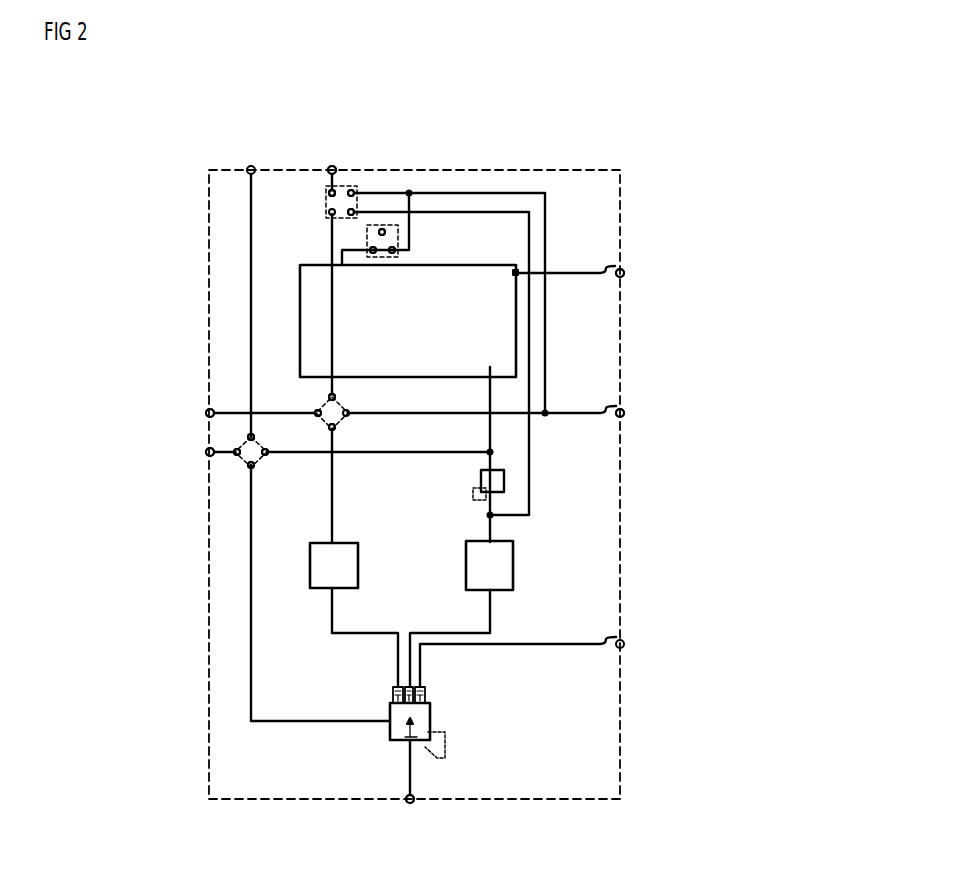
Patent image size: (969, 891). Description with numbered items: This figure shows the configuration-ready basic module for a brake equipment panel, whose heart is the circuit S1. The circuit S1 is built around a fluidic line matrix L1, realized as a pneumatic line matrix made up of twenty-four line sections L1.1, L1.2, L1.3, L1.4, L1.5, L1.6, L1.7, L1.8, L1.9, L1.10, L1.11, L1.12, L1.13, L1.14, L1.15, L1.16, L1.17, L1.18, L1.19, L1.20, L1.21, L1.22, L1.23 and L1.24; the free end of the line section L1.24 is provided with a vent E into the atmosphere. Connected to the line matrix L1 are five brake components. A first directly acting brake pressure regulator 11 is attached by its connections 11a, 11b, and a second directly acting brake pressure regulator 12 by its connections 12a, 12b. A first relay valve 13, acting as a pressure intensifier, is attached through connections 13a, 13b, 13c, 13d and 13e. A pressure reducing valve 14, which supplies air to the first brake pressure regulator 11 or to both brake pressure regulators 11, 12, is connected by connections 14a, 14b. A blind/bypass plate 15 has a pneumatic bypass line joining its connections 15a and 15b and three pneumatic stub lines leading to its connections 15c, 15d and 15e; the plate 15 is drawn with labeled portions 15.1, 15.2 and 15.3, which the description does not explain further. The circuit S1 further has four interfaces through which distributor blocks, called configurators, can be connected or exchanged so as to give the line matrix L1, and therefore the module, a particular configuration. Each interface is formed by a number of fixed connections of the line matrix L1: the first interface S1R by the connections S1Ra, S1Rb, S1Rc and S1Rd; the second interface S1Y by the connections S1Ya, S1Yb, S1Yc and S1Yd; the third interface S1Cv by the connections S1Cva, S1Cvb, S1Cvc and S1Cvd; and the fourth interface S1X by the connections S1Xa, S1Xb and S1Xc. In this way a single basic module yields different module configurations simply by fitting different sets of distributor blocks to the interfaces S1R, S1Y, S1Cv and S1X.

The blind/bypass plate 15 is at (332, 323).
The control unit section 15.1 is at (332, 334).
The control unit section 15.2 is at (332, 294).
The control unit section 15.3 is at (515, 275).
The connection 15a is at (332, 288).
The connection 15b is at (332, 382).
The connection 15c is at (490, 370).
The connection 15d is at (515, 272).
The connection 15e is at (345, 271).
The second interface S1Y is at (327, 192).
The connection S1Ya is at (330, 192).
The connection S1Yb is at (351, 215).
The connection S1Yc is at (324, 193).
The connection S1Yd is at (354, 189).
The fourth interface S1X is at (426, 239).
The connection S1Xa is at (375, 254).
The connection S1Xb is at (394, 254).
The connection S1Xc is at (400, 236).
The vent E is at (383, 228).
The third interface S1Cv is at (350, 408).
The connection S1Cva is at (315, 411).
The connection S1Cvb is at (328, 397).
The connection S1Cvc is at (336, 430).
The connection S1Cvd is at (334, 394).
The first interface S1R is at (273, 462).
The connection S1Ra is at (248, 437).
The connection S1Rb is at (234, 451).
The connection S1Rc is at (248, 468).
The connection S1Rd is at (265, 456).
The pressure reducing valve 14 is at (481, 478).
The connection 14a is at (498, 471).
The connection 14b is at (478, 515).
The first directly acting brake pressure regulator 11 is at (513, 565).
The connection 11a is at (513, 542).
The connection 11b is at (493, 597).
The second directly acting brake pressure regulator 12 is at (358, 567).
The connection 12a is at (312, 543).
The connection 12b is at (333, 591).
The first relay valve 13 is at (430, 709).
The connection 13a is at (397, 740).
The connection 13b is at (407, 741).
The connection 13c is at (395, 693).
The connection 13d is at (407, 685).
The connection 13e is at (427, 692).
The fluidic line matrix L1 is at (310, 722).
The line section L1.1 is at (330, 186).
The line section L1.2 is at (332, 337).
The line section L1.3 is at (210, 409).
The line section L1.4 is at (222, 452).
The line section L1.5 is at (412, 778).
The line section L1.6 is at (569, 646).
The line section L1.7 is at (627, 406).
The line section L1.8 is at (627, 266).
The line section L1.9 is at (333, 266).
The line section L1.10 is at (530, 218).
The line section L1.11 is at (537, 191).
The line section L1.12 is at (333, 258).
The line section L1.13 is at (405, 216).
The line section L1.14 is at (362, 318).
The line section L1.15 is at (332, 532).
The line section L1.16 is at (467, 377).
The line section L1.17 is at (251, 622).
The line section L1.18 is at (490, 440).
The line section L1.19 is at (333, 610).
The line section L1.20 is at (488, 618).
The line section L1.21 is at (490, 500).
The line section L1.22 is at (490, 452).
The line section L1.23 is at (490, 383).
The line section L1.24 is at (386, 224).
The circuit S1 is at (529, 719).